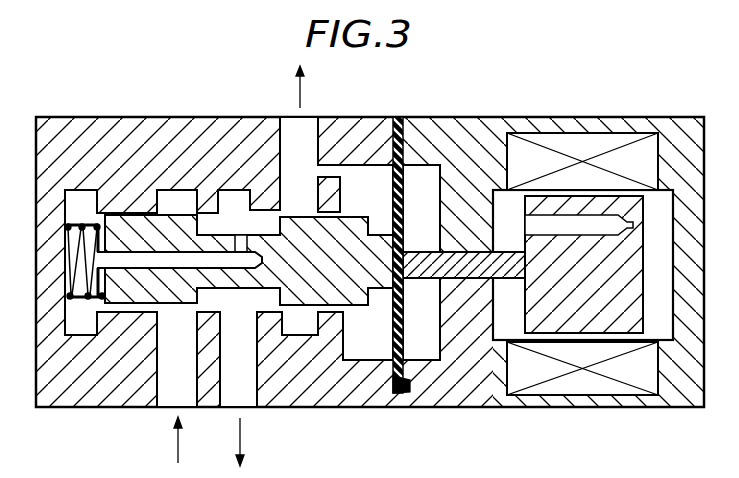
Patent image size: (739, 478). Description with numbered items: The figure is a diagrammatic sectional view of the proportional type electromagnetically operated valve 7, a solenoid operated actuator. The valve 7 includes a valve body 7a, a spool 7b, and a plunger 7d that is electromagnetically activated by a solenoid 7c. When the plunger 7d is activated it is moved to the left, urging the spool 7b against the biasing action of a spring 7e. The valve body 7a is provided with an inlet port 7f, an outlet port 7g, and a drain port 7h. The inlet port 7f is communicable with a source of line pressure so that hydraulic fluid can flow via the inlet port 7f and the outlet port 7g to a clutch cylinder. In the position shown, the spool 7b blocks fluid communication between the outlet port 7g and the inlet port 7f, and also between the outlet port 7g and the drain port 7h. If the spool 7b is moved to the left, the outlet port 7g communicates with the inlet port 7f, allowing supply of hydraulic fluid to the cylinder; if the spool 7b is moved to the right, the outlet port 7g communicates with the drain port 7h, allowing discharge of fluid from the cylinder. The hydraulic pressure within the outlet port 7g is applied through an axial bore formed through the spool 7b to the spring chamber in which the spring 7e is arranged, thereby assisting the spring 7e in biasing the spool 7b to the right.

The electromagnetically operated valve 7 is at (492, 112).
The valve body 7a is at (385, 122).
The spool 7b is at (333, 295).
The solenoid 7c is at (563, 385).
The plunger 7d is at (602, 313).
The spring 7e is at (88, 298).
The inlet port 7f is at (157, 384).
The outlet port 7g is at (253, 393).
The drain port 7h is at (284, 118).